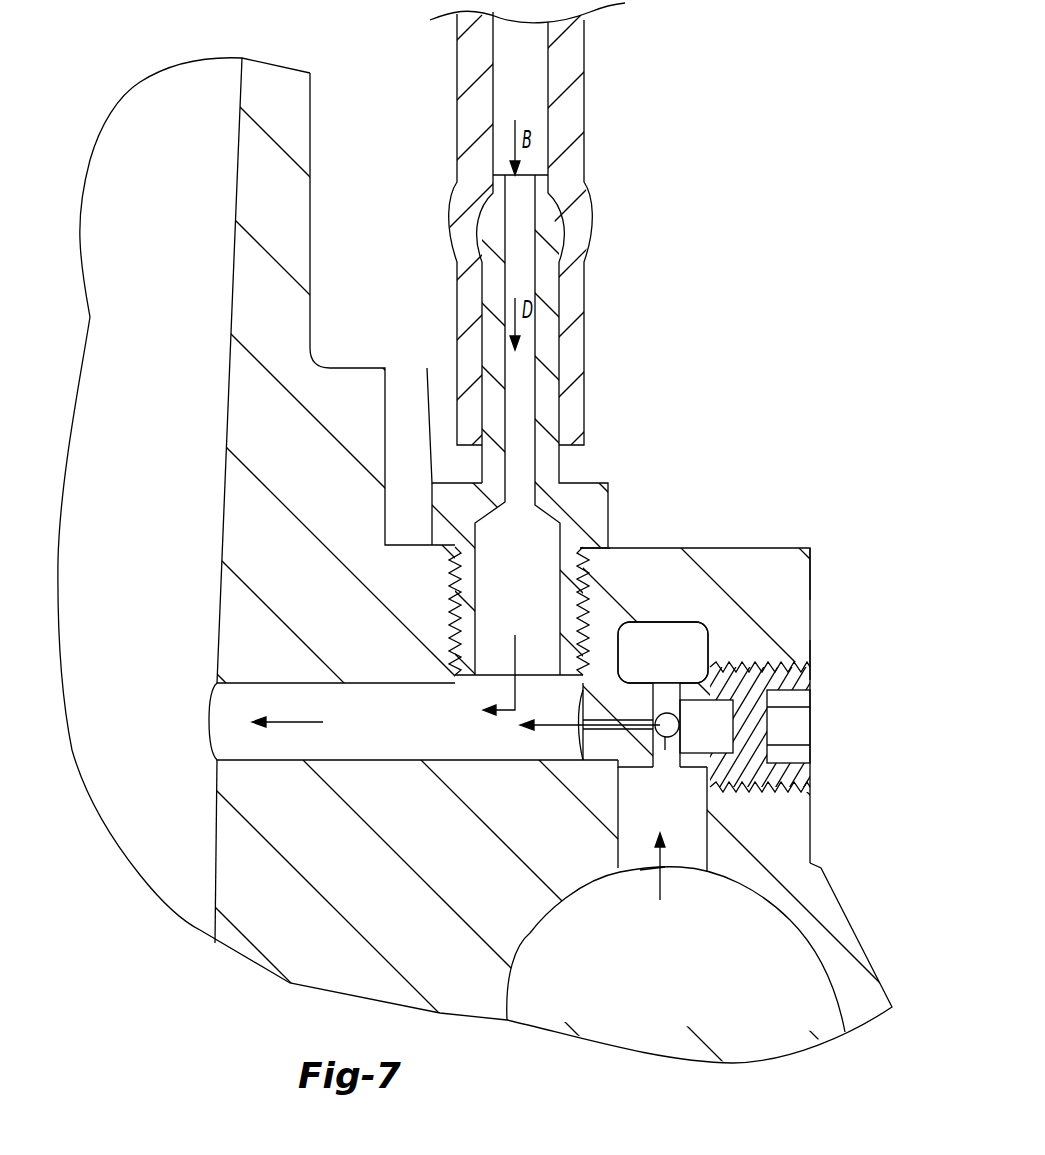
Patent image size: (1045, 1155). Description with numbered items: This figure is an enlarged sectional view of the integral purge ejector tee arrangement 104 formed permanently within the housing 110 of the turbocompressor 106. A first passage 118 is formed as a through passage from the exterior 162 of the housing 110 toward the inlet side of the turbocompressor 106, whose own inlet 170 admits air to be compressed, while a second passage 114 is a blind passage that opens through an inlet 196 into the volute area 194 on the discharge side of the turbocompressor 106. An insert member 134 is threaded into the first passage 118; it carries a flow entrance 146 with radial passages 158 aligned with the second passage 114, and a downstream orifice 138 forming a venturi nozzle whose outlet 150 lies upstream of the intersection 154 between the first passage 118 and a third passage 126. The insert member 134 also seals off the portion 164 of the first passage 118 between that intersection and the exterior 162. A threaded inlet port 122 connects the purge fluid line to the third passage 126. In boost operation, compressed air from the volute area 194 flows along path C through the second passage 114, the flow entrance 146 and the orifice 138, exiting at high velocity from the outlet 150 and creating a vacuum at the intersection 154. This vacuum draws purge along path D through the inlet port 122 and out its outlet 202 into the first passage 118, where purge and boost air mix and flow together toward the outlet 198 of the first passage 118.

The integral purge ejector tee arrangement 104 is at (664, 390).
The turbocompressor 106 is at (208, 268).
The housing 110 is at (782, 565).
The second passage 114 is at (692, 635).
The first passage 118 is at (245, 742).
The inlet port 122 is at (550, 285).
The third passage 126 is at (495, 610).
The insert member 134 is at (838, 652).
The orifice 138 is at (595, 762).
The flow entrance 146 is at (659, 658).
The outlet 150 is at (565, 732).
The intersection 154 is at (490, 725).
The radial passages 158 is at (680, 725).
The exterior 162 is at (813, 570).
The portion 164 is at (770, 788).
The inlet 170 is at (172, 95).
The volute area 194 is at (620, 1010).
The inlet 196 is at (640, 870).
The outlet 198 is at (210, 708).
The outlet 202 is at (483, 680).